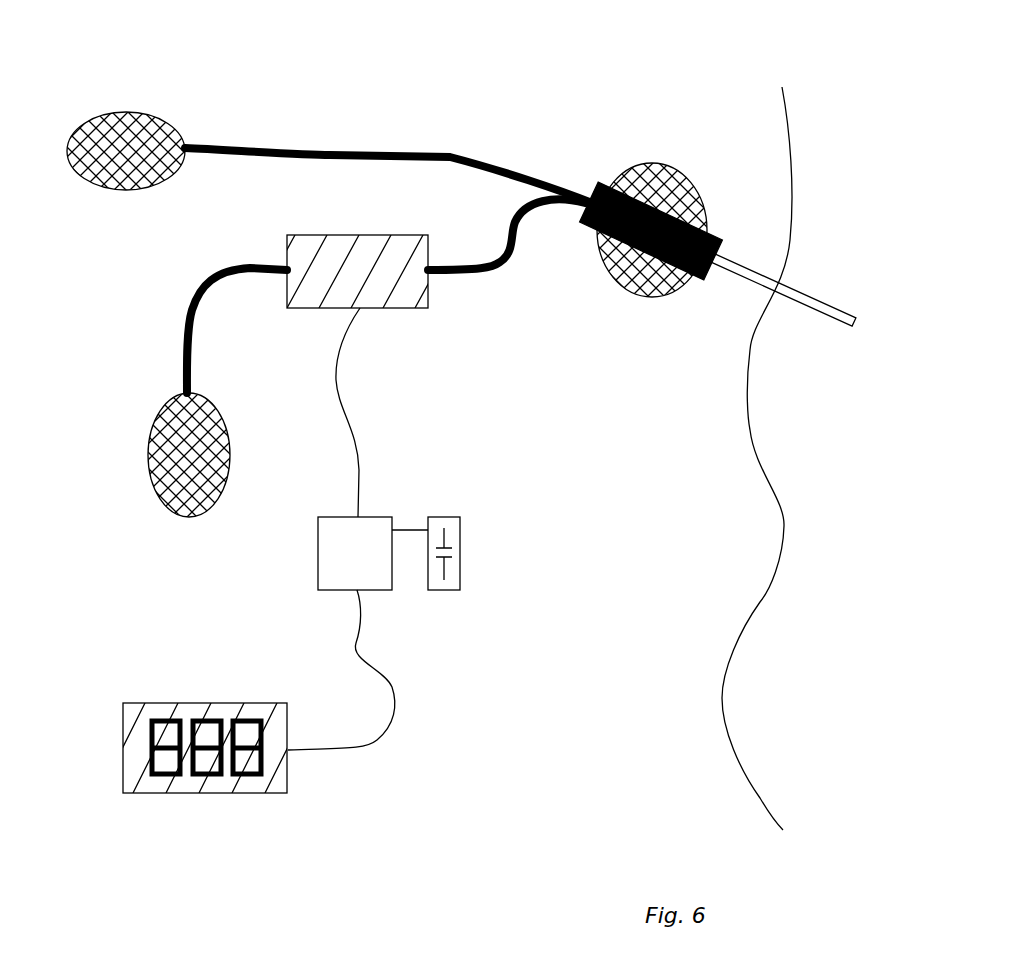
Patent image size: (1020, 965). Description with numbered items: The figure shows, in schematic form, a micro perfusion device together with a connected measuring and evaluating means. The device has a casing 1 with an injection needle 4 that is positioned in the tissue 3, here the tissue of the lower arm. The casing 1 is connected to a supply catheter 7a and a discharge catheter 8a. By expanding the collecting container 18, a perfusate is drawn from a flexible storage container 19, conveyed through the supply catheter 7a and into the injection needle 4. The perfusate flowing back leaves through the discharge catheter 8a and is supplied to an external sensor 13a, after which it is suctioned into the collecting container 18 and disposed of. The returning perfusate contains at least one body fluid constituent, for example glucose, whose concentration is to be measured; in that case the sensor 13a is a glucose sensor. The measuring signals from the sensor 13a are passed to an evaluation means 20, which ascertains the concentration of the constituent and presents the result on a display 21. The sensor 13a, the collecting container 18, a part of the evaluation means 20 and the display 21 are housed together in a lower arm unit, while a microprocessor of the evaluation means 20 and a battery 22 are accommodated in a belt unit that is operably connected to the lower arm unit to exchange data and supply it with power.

The casing 1 is at (605, 183).
The tissue 3 is at (803, 148).
The injection needle 4 is at (817, 300).
The supply catheter 7a is at (360, 150).
The discharge catheter 8a is at (494, 276).
The external sensor 13a is at (333, 235).
The collecting container 18 is at (153, 483).
The flexible storage container 19 is at (130, 112).
The evaluation means 20 is at (463, 728).
The display 21 is at (217, 793).
The battery 22 is at (460, 572).